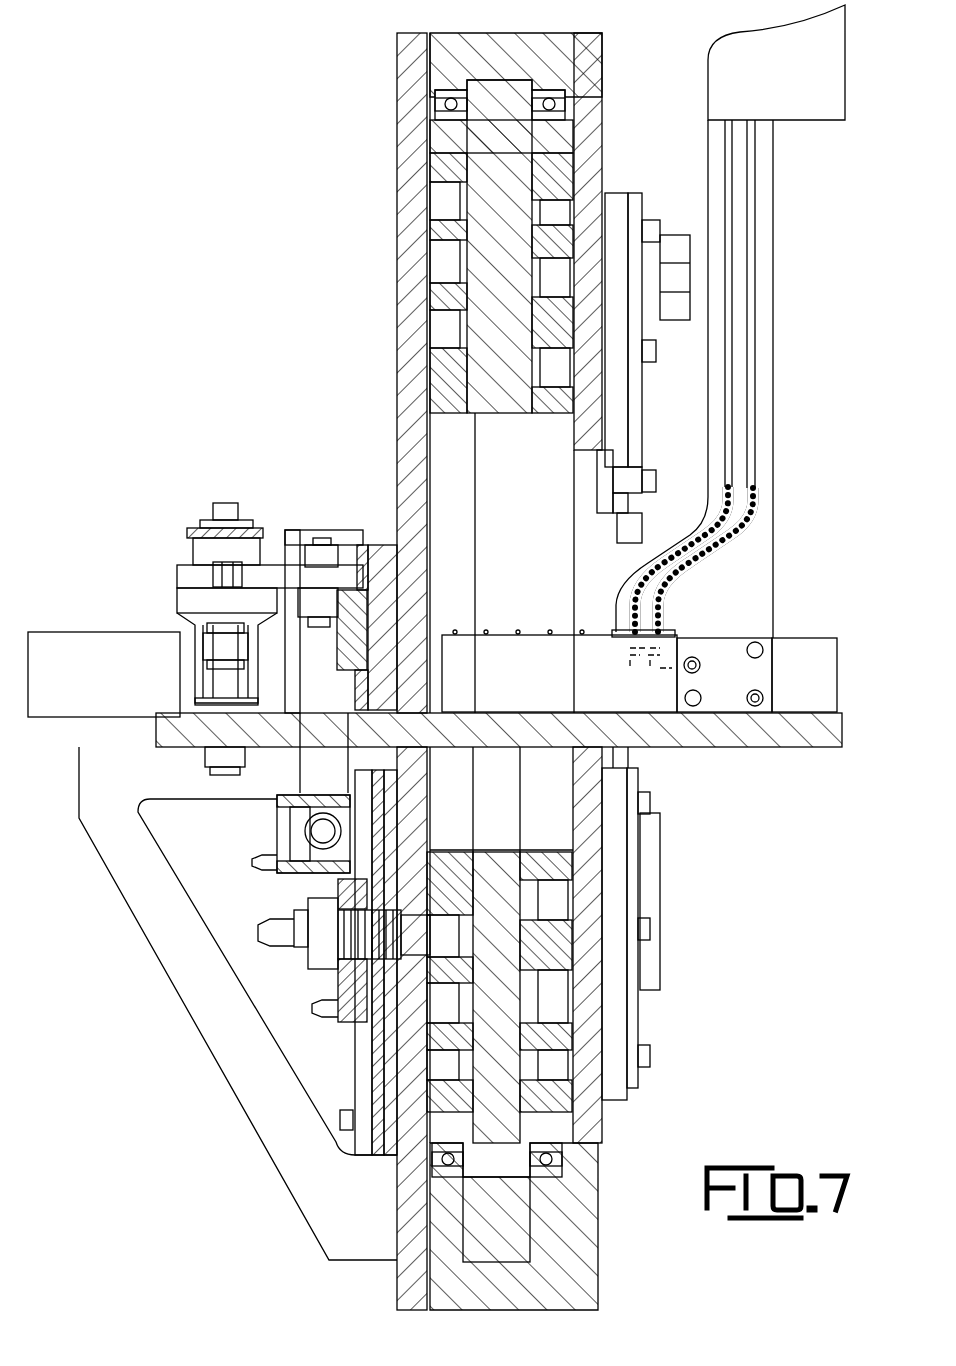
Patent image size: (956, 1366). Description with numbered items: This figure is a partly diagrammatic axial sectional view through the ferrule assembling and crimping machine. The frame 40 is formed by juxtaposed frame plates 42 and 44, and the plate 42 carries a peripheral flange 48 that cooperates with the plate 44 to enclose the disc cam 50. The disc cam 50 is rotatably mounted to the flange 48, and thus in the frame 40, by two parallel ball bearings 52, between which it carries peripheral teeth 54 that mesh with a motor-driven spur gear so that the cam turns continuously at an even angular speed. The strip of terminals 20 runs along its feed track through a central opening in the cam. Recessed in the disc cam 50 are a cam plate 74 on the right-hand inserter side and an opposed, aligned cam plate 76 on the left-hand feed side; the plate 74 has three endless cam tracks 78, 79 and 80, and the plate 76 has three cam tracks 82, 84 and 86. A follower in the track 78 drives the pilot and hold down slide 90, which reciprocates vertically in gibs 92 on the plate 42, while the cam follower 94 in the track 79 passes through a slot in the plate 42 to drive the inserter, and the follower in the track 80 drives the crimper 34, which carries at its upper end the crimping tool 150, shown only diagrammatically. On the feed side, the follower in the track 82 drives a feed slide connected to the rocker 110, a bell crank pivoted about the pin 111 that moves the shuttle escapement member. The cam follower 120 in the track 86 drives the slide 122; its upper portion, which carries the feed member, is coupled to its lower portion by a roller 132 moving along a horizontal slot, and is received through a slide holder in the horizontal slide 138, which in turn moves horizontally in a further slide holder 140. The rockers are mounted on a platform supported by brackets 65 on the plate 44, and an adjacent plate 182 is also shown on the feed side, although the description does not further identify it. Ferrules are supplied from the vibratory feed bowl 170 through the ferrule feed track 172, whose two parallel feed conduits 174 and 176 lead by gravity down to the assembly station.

The strip of terminals 20 is at (489, 632).
The crimper 34 is at (620, 885).
The frame 40 is at (396, 118).
The frame plate 42 is at (603, 75).
The frame plate 44 is at (393, 1292).
The peripheral flange 48 is at (515, 45).
The disc cam 50 is at (527, 500).
The ball bearings 52 is at (448, 104).
The peripheral teeth 54 is at (490, 88).
The brackets 65 is at (188, 990).
The cam plate 74 is at (540, 150).
The cam plate 76 is at (455, 148).
The cam track 78 is at (546, 225).
The cam track 79 is at (540, 280).
The cam track 80 is at (552, 380).
The cam track 82 is at (440, 200).
The cam track 84 is at (440, 258).
The cam track 86 is at (440, 335).
The pilot and hold down slide 90 is at (640, 410).
The gibs 92 is at (625, 450).
The cam follower 94 is at (618, 260).
The rocker 110 is at (262, 570).
The pin 111 is at (225, 503).
The cam follower 120 is at (282, 940).
The slide 122 is at (345, 885).
The roller 132 is at (322, 831).
The horizontal slide 138 is at (382, 545).
The slide holder 140 is at (352, 600).
The crimping tool 150 is at (700, 655).
The vibratory feed bowl 170 is at (776, 62).
The ferrule feed track 172 is at (762, 248).
The feed conduit 174 is at (725, 335).
The feed conduit 176 is at (735, 542).
The plate 182 is at (372, 1070).